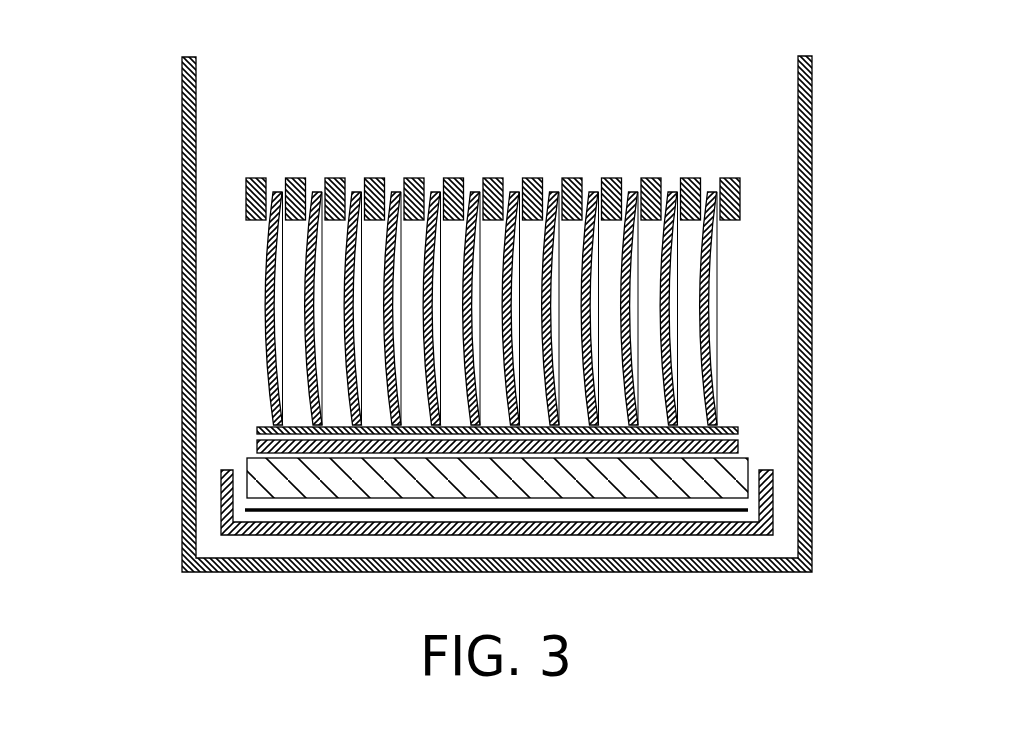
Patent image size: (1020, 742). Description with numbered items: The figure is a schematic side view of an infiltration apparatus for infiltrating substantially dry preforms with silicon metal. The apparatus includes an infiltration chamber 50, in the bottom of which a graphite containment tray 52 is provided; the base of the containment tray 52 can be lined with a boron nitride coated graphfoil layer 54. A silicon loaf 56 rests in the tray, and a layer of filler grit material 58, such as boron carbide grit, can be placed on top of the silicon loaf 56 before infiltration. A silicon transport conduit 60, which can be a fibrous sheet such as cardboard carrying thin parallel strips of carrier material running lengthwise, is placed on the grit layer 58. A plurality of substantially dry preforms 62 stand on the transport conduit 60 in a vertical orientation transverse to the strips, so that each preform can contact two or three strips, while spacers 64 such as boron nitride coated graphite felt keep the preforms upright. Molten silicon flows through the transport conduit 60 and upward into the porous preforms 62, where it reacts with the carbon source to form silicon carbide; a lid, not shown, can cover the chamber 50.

The infiltration chamber 50 is at (812, 300).
The graphite containment tray 52 is at (773, 505).
The boron nitride coated graphfoil layer 54 is at (690, 512).
The silicon loaf 56 is at (748, 460).
The filler grit material layer 58 is at (257, 443).
The silicon transport conduit 60 is at (257, 428).
The substantially dry preforms 62 is at (266, 317).
The spacers 64 is at (246, 188).